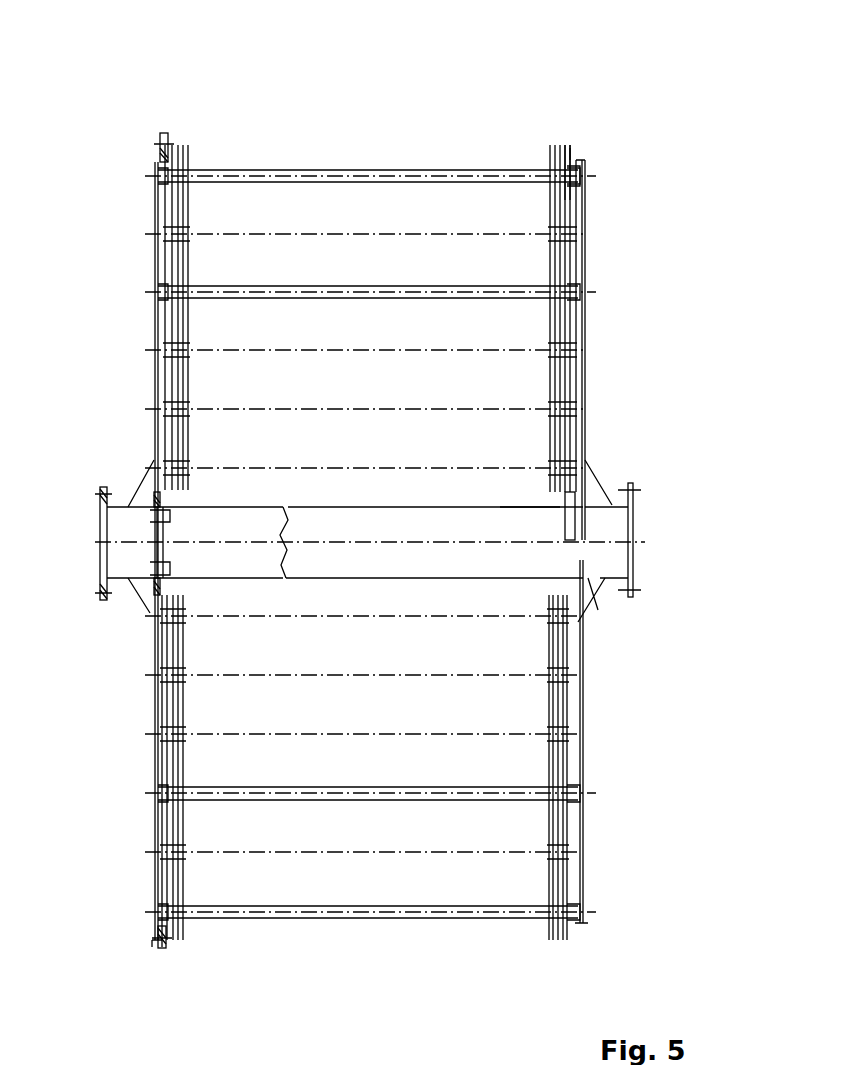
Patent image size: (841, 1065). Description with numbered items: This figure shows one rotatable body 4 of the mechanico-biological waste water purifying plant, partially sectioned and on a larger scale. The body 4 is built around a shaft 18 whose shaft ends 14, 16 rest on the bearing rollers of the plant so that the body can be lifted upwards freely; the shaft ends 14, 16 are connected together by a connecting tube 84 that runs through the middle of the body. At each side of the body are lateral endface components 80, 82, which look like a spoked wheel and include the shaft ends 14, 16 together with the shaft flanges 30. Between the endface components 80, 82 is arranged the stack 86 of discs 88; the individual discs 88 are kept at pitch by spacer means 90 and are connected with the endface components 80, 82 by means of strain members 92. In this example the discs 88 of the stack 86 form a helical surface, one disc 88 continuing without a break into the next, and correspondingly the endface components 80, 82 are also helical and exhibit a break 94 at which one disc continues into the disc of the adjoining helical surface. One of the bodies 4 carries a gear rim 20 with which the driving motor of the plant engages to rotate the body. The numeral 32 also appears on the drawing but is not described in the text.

The rotatable body 4 is at (481, 120).
The stack of discs 86 is at (558, 100).
The gear rim 20 is at (160, 137).
The endface component 80 is at (160, 331).
The shaft end 16 is at (120, 507).
The shaft flange 30 is at (100, 597).
The disc 88 is at (565, 148).
The strain member 92 is at (580, 180).
The spacer means 90 is at (565, 182).
The endface component 82 is at (580, 318).
The shaft 18 is at (451, 510).
The connecting tube 84 is at (515, 522).
The shaft end 14 is at (615, 518).
The bracket 32 is at (637, 498).
The break 94 is at (568, 540).